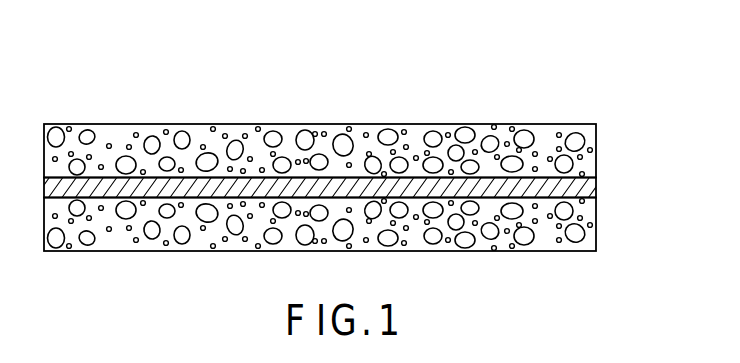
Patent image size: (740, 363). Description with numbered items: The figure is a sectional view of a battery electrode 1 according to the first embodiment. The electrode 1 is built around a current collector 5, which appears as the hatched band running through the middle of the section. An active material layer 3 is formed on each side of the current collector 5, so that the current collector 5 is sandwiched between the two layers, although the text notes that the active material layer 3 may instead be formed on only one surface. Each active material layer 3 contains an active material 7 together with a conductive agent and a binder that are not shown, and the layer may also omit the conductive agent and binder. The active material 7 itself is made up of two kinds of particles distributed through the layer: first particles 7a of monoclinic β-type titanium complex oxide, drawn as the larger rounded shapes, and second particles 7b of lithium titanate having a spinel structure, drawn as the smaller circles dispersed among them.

The electrode 1 is at (125, 81).
The active material layer 3 is at (596, 138).
The current collector 5 is at (590, 193).
The active material 7 is at (243, 80).
The first particles 7a is at (155, 136).
The second particles 7b is at (226, 133).